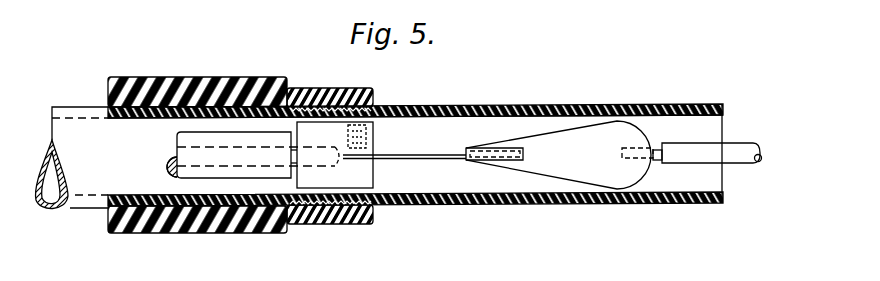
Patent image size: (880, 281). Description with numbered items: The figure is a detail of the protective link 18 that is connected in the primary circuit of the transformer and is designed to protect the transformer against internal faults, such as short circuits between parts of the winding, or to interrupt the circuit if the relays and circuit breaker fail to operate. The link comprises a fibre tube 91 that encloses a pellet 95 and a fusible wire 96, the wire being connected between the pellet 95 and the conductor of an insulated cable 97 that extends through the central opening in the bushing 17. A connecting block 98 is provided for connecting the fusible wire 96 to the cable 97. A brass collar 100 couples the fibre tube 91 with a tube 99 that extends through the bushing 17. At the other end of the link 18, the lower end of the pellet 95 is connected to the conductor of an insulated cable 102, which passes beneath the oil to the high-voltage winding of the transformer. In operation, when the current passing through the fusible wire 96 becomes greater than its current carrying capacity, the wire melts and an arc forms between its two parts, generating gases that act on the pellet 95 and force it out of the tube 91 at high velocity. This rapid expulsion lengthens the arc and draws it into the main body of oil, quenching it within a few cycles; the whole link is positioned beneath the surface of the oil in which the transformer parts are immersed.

The bushing 17 is at (226, 229).
The protective link 18 is at (481, 95).
The fibre tube 91 is at (524, 105).
The pellet 95 is at (611, 173).
The fusible wire 96 is at (417, 160).
The insulated cable 97 is at (272, 172).
The connecting block 98 is at (363, 178).
The tube 99 is at (160, 117).
The brass collar 100 is at (334, 91).
The insulated cable 102 is at (750, 140).